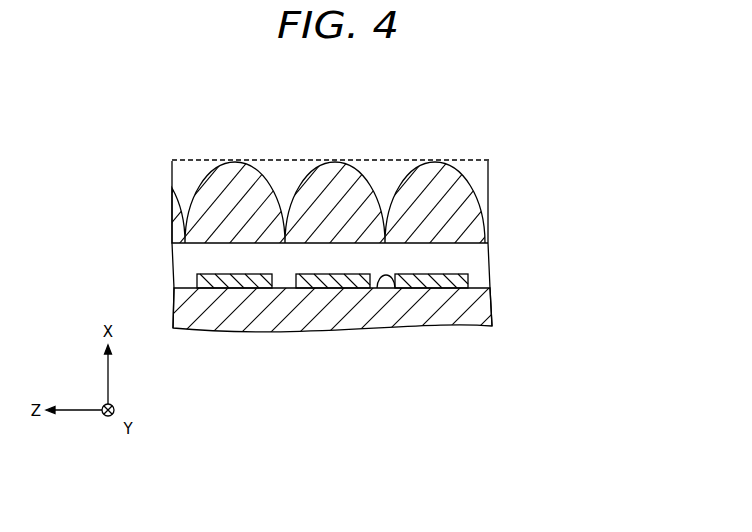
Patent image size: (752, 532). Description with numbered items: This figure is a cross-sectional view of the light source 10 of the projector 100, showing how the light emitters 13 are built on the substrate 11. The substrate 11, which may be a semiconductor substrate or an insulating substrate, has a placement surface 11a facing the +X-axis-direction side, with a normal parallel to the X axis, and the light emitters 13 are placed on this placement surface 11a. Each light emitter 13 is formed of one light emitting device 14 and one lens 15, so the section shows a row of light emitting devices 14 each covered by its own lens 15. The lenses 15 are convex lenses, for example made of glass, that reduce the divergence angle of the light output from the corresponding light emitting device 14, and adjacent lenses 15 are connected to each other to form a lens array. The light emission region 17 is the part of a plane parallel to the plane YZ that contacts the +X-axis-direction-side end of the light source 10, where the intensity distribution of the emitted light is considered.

The projector 100 is at (578, 117).
The light source 10 is at (523, 130).
The light emission region 17 is at (470, 159).
The light emitter 13 is at (108, 210).
The lens 15 is at (216, 217).
The light emitting device 14 is at (200, 279).
The substrate 11 is at (458, 308).
The placement surface 11a is at (394, 288).